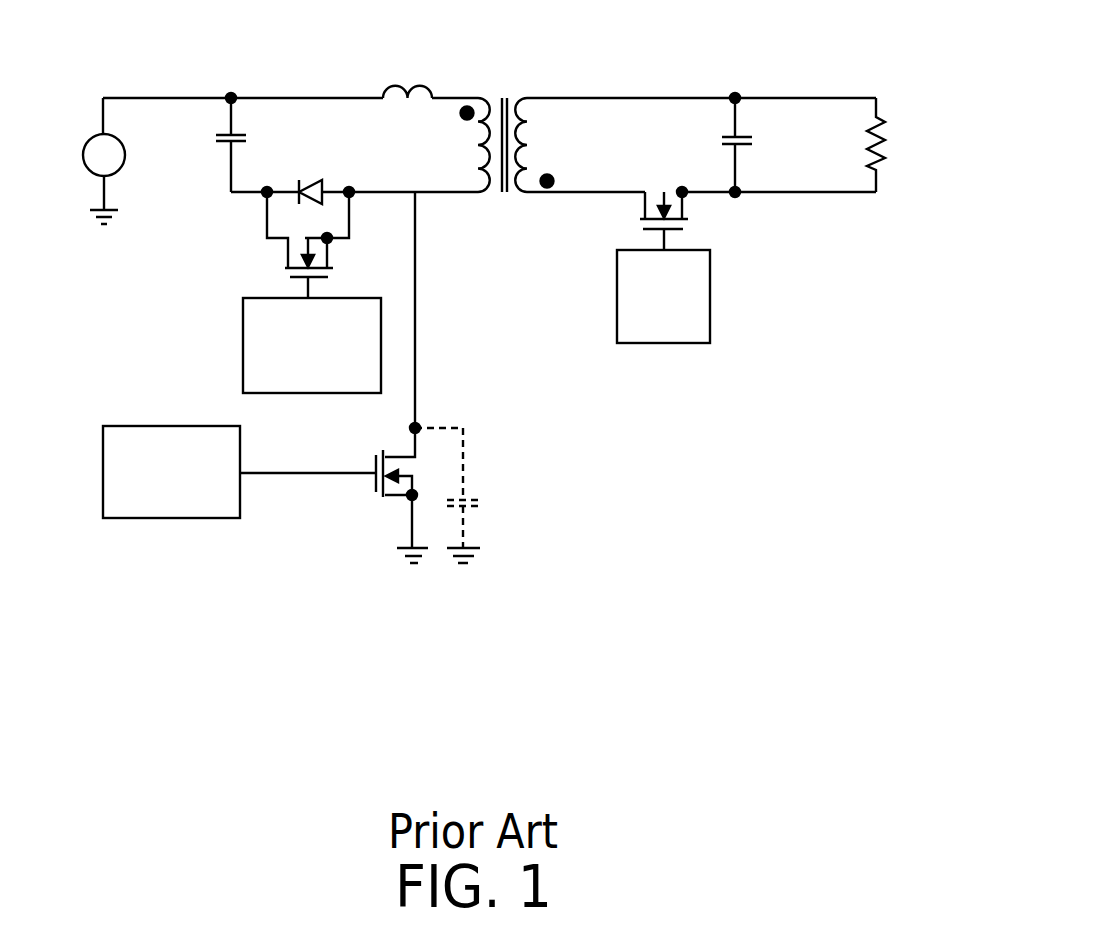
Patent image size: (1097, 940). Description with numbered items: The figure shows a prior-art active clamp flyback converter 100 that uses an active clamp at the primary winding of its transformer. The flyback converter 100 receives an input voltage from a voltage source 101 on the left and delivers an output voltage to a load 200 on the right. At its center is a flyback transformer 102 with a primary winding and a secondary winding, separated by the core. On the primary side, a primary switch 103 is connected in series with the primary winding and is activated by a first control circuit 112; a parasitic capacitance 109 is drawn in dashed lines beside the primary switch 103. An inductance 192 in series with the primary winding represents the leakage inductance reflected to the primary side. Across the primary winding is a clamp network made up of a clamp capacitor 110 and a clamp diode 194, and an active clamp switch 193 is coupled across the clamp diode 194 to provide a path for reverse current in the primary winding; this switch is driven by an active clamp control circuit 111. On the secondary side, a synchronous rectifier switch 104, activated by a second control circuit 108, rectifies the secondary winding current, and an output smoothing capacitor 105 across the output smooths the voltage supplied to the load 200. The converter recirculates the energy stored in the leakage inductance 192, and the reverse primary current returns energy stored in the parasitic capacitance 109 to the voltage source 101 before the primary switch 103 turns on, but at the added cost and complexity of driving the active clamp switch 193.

The active clamp flyback converter 100 is at (243, 60).
The voltage source 101 is at (125, 157).
The flyback transformer 102 is at (503, 95).
The primary switch 103 is at (387, 498).
The synchronous rectifier switch 104 is at (665, 190).
The output smoothing capacitor 105 is at (755, 138).
The second control circuit 108 is at (710, 285).
The parasitic capacitance 109 is at (470, 500).
The clamp capacitor 110 is at (255, 140).
The active clamp control circuit 111 is at (243, 350).
The first control circuit 112 is at (182, 518).
The leakage inductance 192 is at (418, 86).
The active clamp switch 193 is at (283, 240).
The clamp diode 194 is at (322, 184).
The load 200 is at (878, 115).